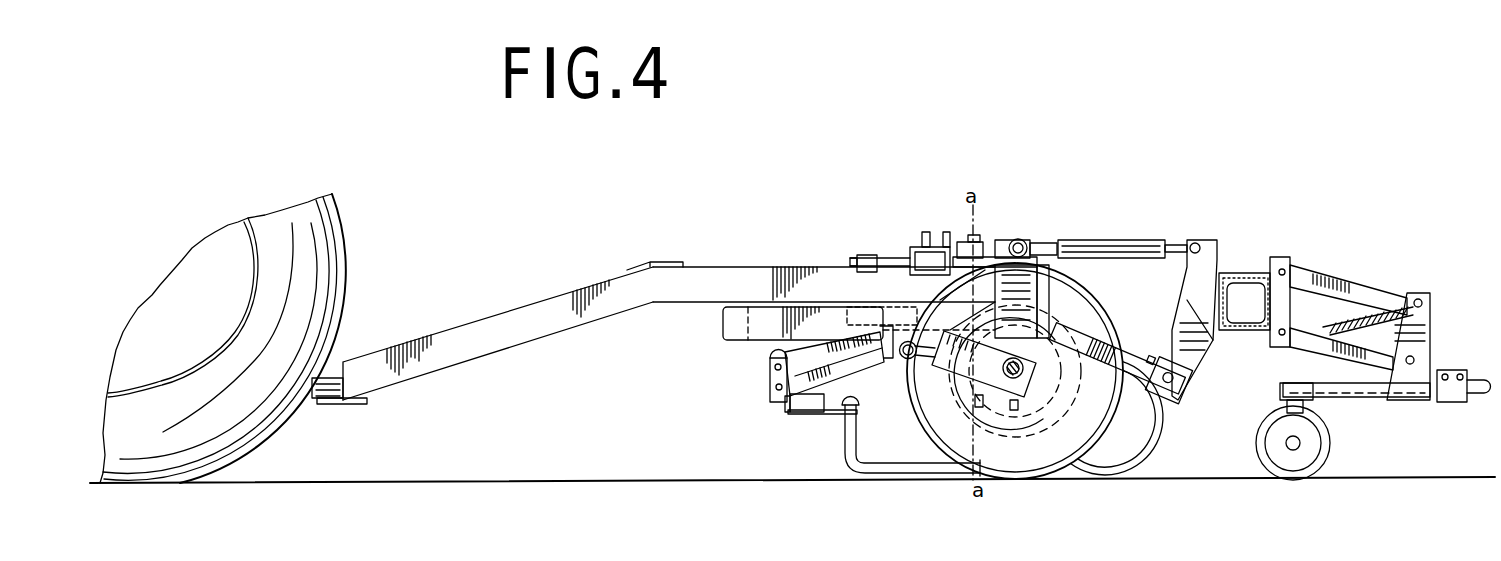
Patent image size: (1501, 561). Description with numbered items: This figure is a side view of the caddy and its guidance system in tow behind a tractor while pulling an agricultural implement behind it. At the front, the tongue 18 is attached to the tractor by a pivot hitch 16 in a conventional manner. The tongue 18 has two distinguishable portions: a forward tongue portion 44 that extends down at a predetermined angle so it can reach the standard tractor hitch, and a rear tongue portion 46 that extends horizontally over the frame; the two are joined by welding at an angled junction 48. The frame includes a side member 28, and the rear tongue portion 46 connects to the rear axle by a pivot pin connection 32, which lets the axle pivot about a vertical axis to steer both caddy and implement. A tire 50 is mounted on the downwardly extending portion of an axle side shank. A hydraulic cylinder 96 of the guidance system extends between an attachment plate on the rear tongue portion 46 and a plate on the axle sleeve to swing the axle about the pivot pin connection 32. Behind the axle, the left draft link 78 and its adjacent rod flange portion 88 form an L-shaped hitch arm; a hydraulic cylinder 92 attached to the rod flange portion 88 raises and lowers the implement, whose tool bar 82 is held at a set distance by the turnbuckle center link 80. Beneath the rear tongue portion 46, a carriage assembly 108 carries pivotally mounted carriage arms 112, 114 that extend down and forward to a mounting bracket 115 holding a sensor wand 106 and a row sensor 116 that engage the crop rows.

The pivot hitch 16 is at (324, 404).
The tongue 18 is at (591, 323).
The side member 28 is at (770, 341).
The pivot pin connection 32 is at (980, 239).
The forward tongue portion 44 is at (493, 336).
The rear tongue portion 46 is at (743, 283).
The angled junction 48 is at (655, 262).
The tire 50 is at (1102, 312).
The left draft link 78 is at (1137, 337).
The center link 80 is at (1122, 240).
The tool bar 82 is at (1230, 272).
The rod flange portion 88 is at (1015, 371).
The hydraulic cylinder 92 is at (945, 365).
The hydraulic cylinder 96 is at (933, 248).
The sensor wand 106 is at (852, 478).
The carriage assembly 108 is at (762, 405).
The carriage arm 112 is at (768, 367).
The carriage arm 114 is at (840, 363).
The mounting bracket 115 is at (787, 403).
The row sensor 116 is at (812, 402).